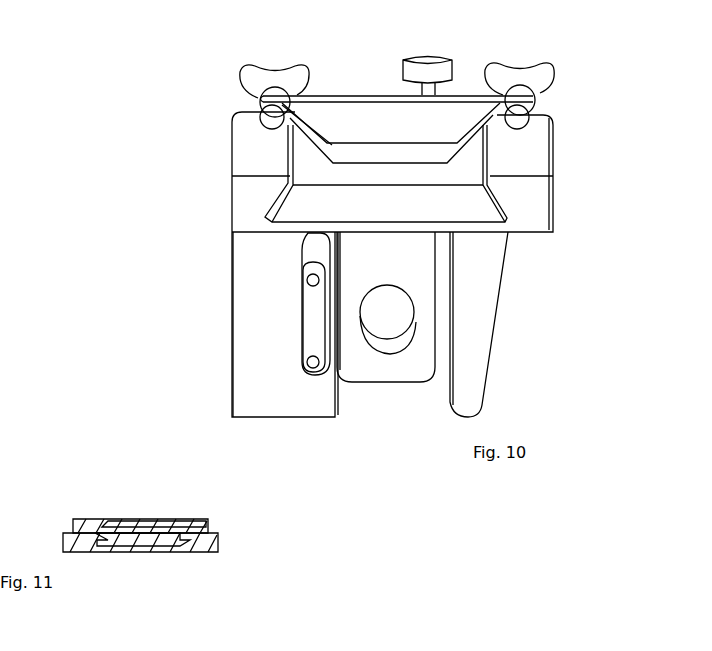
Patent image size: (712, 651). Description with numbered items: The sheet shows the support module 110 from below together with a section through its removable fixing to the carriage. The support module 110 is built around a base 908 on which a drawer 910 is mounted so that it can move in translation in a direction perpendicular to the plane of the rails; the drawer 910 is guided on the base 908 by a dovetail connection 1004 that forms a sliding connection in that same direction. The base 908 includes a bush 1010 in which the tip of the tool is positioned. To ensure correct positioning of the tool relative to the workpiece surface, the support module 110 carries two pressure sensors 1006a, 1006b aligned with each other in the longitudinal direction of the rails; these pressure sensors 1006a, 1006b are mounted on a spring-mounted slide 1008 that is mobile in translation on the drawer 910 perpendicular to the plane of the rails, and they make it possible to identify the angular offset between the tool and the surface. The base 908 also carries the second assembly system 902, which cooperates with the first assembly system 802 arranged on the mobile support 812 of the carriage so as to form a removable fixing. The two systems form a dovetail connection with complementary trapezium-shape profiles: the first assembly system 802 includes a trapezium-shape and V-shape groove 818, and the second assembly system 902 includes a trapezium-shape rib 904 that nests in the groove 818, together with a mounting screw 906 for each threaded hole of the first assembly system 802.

In FIG. 10, the support module 110 is at (200, 77).
In FIG. 10, the second assembly system 902 is at (350, 68).
In FIG. 11, the second assembly system 902 is at (127, 502).
In FIG. 10, the base 908 is at (335, 118).
In FIG. 11, the base 908 is at (83, 518).
In FIG. 10, the mounting screw 906 is at (533, 78).
In FIG. 10, the trapezium-shape rib 904 is at (357, 152).
In FIG. 11, the trapezium-shape rib 904 is at (133, 527).
In FIG. 10, the drawer 910 is at (537, 190).
In FIG. 10, the dovetail connection 1004 is at (267, 202).
In FIG. 10, the pressure sensor 1006b is at (300, 278).
In FIG. 10, the spring-mounted slide 1008 is at (312, 318).
In FIG. 10, the pressure sensor 1006a is at (302, 370).
In FIG. 10, the bush 1010 is at (395, 348).
In FIG. 11, the first assembly system 802 is at (237, 538).
In FIG. 11, the trapezium-shape groove 818 is at (117, 555).
In FIG. 11, the mobile support 812 is at (203, 553).